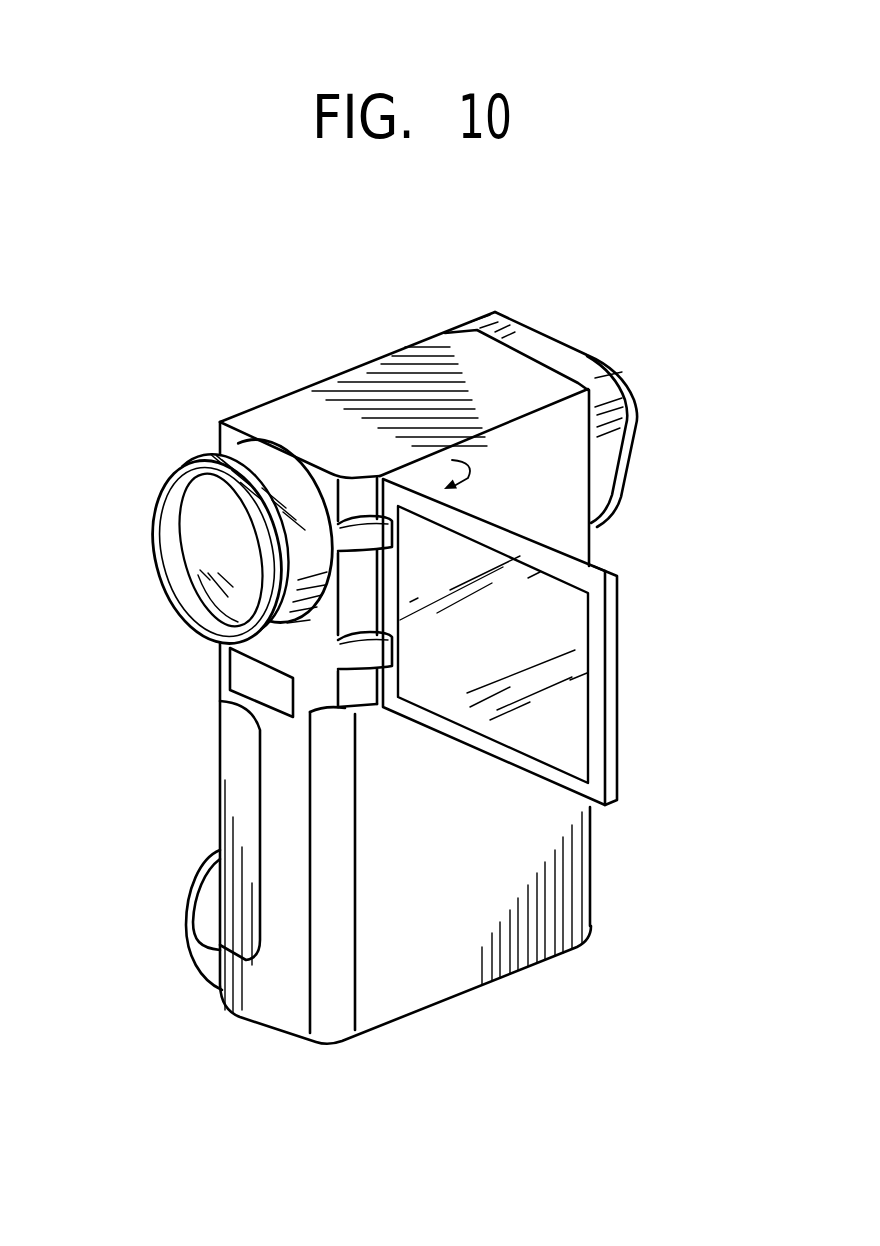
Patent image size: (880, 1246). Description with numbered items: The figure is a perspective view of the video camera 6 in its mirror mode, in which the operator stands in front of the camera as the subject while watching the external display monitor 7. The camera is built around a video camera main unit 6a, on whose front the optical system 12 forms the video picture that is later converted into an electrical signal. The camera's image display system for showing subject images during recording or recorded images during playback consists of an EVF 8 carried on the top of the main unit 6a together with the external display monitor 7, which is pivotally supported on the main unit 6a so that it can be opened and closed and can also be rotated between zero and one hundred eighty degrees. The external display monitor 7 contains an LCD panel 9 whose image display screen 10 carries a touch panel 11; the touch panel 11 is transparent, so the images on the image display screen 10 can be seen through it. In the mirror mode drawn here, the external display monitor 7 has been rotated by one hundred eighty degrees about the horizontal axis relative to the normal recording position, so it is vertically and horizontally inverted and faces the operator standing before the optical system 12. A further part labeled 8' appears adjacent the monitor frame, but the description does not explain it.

The video camera 6 is at (264, 370).
The video camera main unit 6a is at (519, 395).
The external display monitor 7 is at (633, 784).
The EVF 8 is at (541, 386).
The hinge portion 8' is at (666, 581).
The LCD panel 9 is at (575, 650).
The image display screen 10 is at (437, 698).
The touch panel 11 is at (530, 735).
The optical system 12 is at (197, 520).